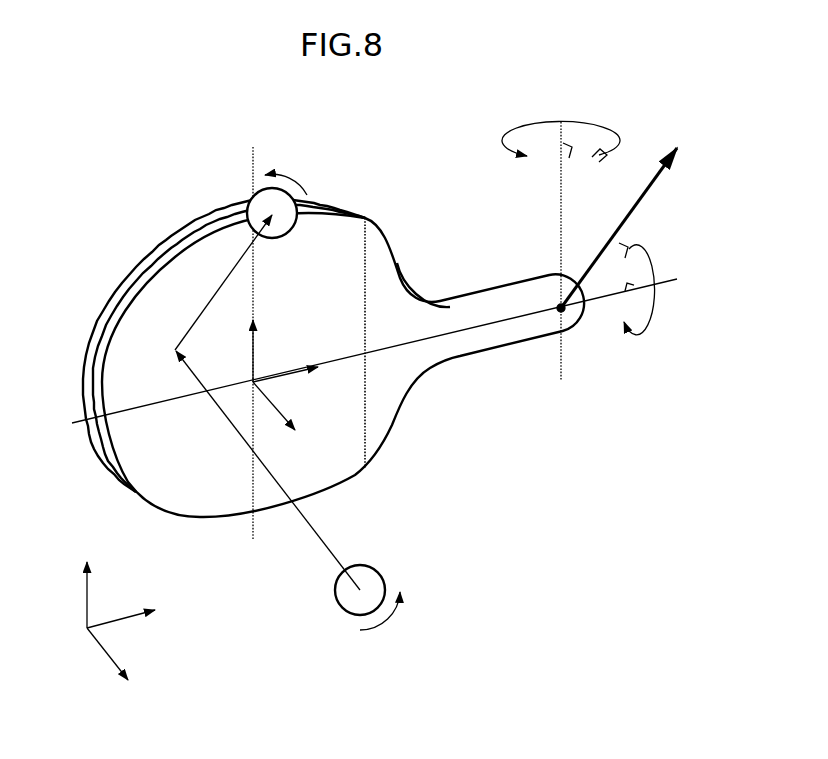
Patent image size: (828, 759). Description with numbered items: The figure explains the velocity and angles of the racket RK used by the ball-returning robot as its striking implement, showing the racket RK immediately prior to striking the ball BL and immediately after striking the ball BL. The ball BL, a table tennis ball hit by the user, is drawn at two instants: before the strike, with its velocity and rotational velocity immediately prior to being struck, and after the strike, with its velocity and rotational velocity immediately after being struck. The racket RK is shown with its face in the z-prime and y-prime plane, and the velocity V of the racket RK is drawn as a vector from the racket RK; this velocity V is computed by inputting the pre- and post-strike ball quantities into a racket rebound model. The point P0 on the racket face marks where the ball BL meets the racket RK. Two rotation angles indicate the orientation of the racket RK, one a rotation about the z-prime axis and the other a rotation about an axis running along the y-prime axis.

The ball BL is at (250, 200).
The racket RK is at (470, 353).
The velocity of the racket V is at (627, 217).
The hit point P0 is at (251, 402).